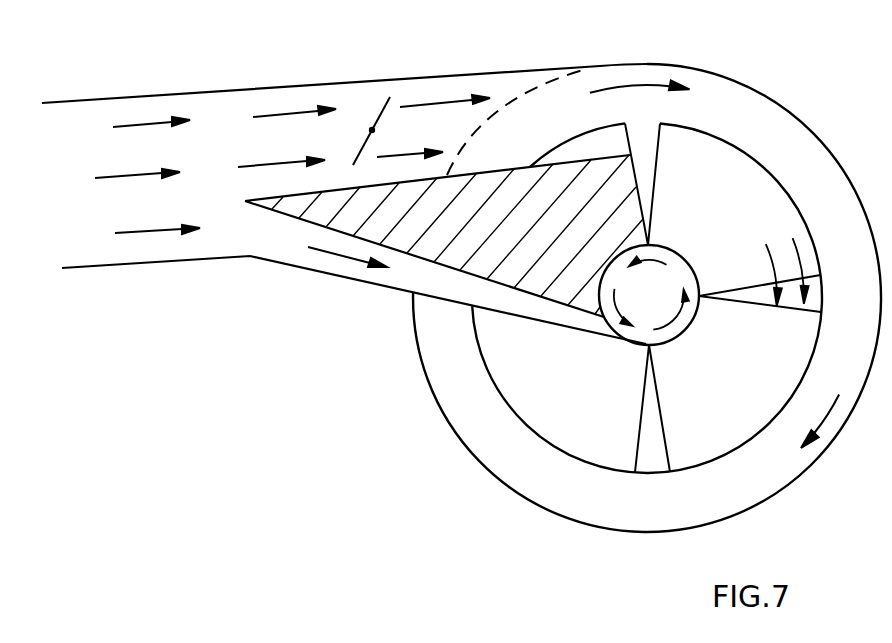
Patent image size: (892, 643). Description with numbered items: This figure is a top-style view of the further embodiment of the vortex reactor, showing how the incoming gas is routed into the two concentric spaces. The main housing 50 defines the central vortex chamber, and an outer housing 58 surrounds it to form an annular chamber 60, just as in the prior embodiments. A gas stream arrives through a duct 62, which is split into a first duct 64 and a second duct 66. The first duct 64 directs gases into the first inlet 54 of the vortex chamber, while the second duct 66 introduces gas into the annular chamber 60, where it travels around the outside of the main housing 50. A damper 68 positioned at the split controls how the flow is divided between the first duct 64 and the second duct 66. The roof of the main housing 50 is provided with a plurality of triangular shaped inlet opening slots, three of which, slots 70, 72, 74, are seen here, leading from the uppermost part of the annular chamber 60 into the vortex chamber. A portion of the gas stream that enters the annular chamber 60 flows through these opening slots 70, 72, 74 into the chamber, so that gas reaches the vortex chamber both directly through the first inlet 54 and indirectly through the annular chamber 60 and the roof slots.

The main housing 50 is at (748, 450).
The first inlet 54 is at (683, 262).
The outer housing 58 is at (803, 122).
The annular chamber 60 is at (770, 489).
The duct 62 is at (218, 122).
The first duct 64 is at (402, 277).
The second duct 66 is at (458, 87).
The damper 68 is at (383, 97).
The triangular shaped inlet opening slot 70 is at (650, 188).
The triangular shaped inlet opening slot 72 is at (807, 310).
The triangular shaped inlet opening slot 74 is at (647, 453).